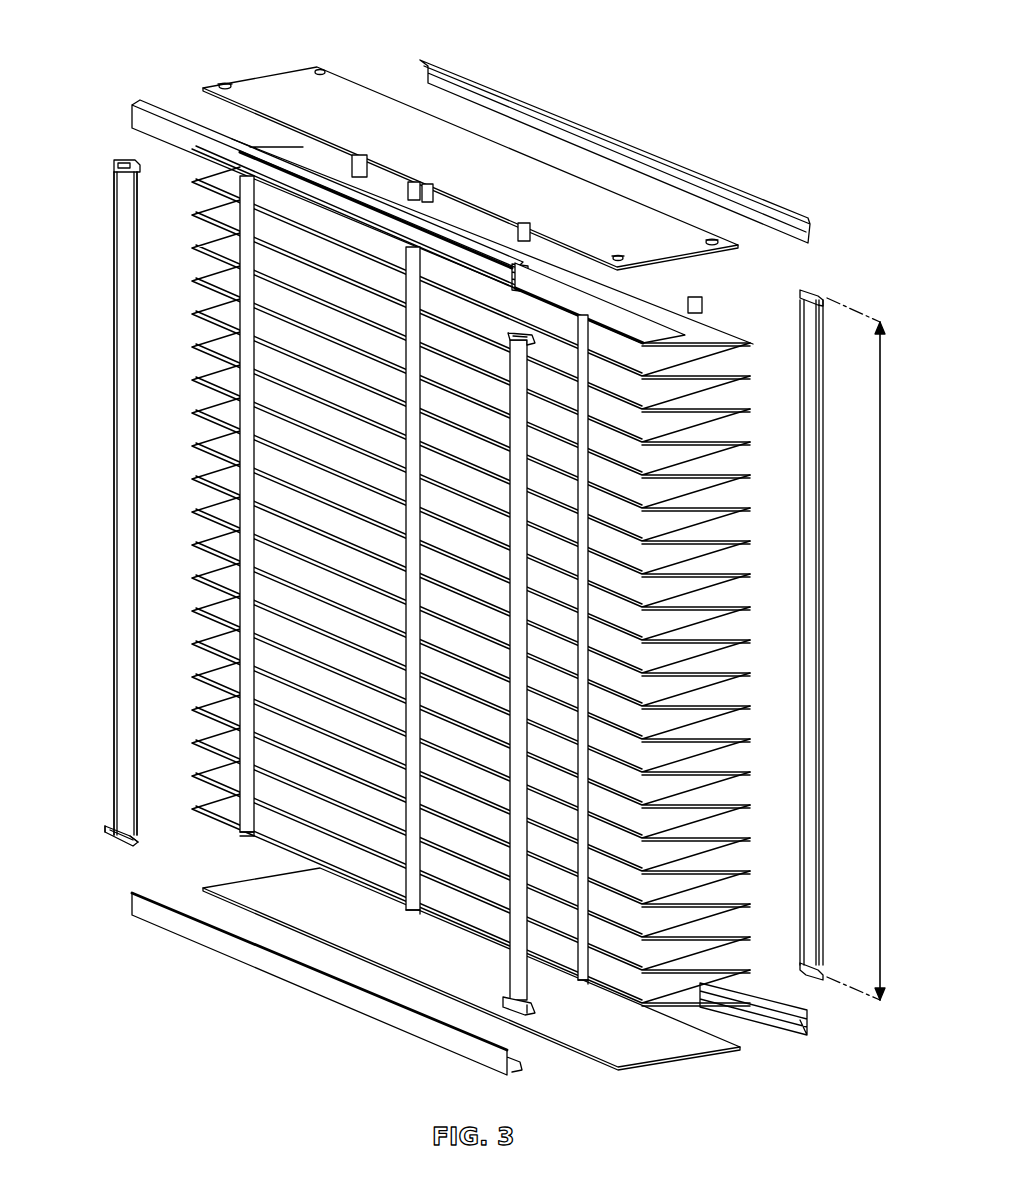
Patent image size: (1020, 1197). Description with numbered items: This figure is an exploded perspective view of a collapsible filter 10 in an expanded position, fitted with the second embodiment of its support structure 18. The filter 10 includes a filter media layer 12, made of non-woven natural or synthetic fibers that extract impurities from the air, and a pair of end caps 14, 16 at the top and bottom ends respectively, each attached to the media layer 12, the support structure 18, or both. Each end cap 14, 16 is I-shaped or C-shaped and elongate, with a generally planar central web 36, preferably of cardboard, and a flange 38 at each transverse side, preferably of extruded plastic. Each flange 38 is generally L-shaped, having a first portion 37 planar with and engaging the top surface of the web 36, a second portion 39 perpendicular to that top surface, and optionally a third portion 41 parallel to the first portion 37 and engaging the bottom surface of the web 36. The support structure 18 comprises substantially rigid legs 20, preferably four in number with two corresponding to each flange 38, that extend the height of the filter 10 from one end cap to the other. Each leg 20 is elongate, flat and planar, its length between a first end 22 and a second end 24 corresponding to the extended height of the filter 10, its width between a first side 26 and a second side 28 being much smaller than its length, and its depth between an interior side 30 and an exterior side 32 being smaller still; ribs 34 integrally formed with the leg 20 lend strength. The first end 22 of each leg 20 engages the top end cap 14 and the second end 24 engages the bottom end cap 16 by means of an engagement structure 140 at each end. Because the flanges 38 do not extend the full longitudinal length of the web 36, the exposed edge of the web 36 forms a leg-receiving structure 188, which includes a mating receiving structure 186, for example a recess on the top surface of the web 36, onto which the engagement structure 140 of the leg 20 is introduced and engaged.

The filter 10 is at (477, 559).
The filter media layer 12 is at (725, 668).
The top end cap 14 is at (478, 146).
The bottom end cap 16 is at (675, 1040).
The support structure 18 is at (828, 605).
The leg 20 is at (125, 672).
The first end 22 is at (125, 501).
The second end 24 is at (113, 835).
The first side 26 is at (112, 803).
The second side 28 is at (140, 822).
The interior side 30 is at (810, 875).
The exterior side 32 is at (134, 590).
The rib 34 is at (132, 706).
The central web 36 is at (478, 565).
The first portion 37 is at (370, 177).
The flange 38 is at (600, 128).
The second portion 39 is at (145, 123).
The third portion 41 is at (522, 283).
The engagement structure 140 is at (860, 292).
The mating receiving structure 186 is at (222, 82).
The leg-receiving structure 188 is at (228, 82).